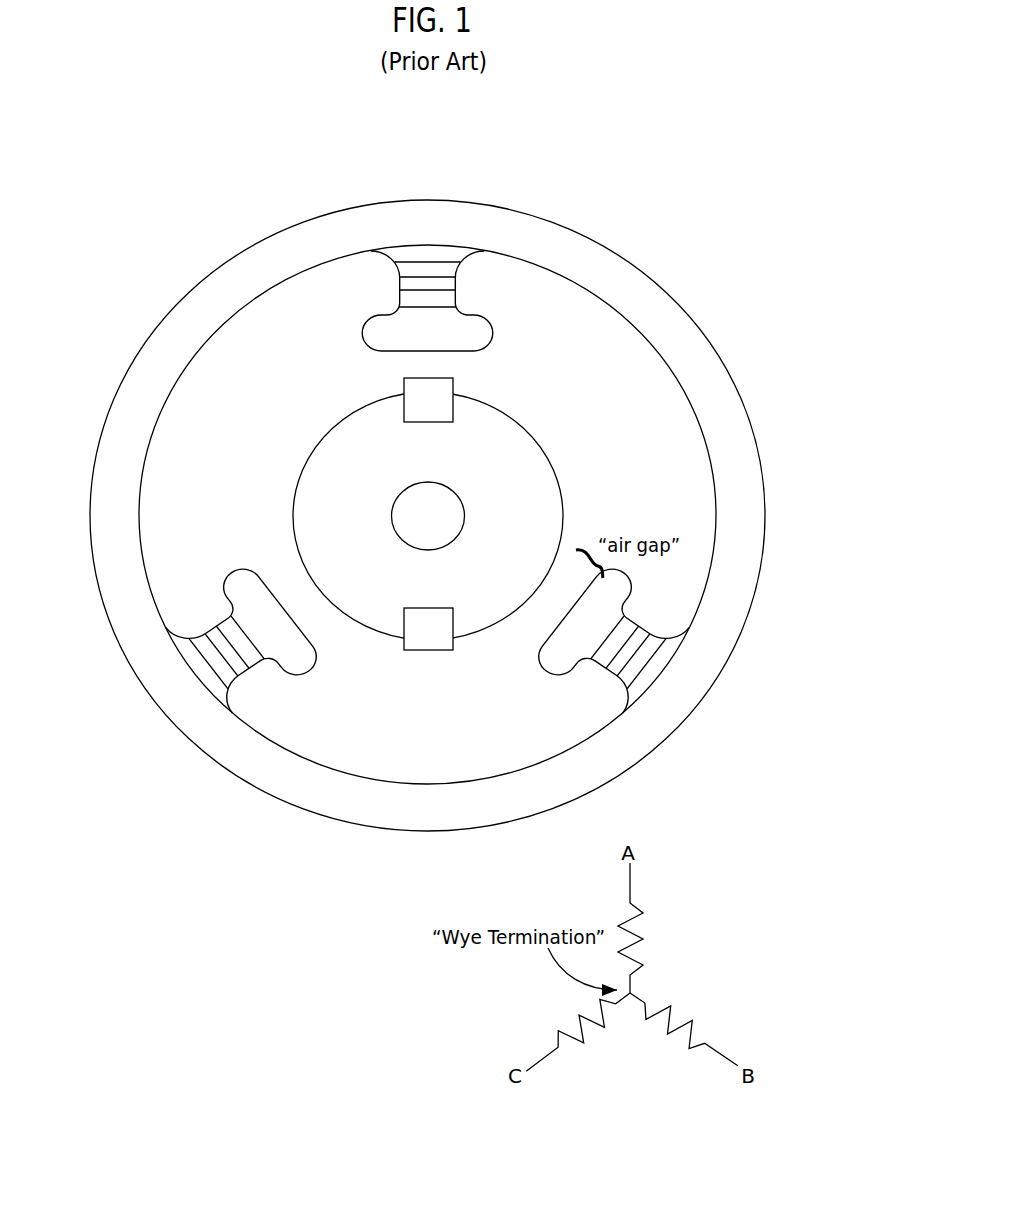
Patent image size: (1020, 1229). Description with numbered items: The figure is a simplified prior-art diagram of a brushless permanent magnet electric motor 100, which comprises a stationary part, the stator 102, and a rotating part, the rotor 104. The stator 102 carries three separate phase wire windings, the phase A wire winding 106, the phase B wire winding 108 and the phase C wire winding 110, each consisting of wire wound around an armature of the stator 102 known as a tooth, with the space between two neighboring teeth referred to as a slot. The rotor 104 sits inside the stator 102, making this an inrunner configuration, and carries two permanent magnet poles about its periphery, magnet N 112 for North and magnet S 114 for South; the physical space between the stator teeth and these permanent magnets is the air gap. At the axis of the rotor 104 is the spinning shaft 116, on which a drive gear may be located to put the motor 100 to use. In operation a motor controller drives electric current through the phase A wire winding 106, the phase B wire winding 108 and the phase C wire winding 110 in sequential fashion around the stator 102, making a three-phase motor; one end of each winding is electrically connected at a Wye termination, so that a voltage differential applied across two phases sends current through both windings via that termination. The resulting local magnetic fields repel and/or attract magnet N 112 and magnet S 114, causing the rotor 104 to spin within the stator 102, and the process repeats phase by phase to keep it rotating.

The motor 100 is at (153, 195).
The stator 102 is at (330, 205).
The rotor 104 is at (325, 423).
The phase A wire winding 106 is at (428, 243).
The phase B wire winding 108 is at (640, 700).
The phase C wire winding 110 is at (205, 683).
The magnet N 112 is at (458, 377).
The magnet S 114 is at (405, 648).
The shaft 116 is at (465, 505).